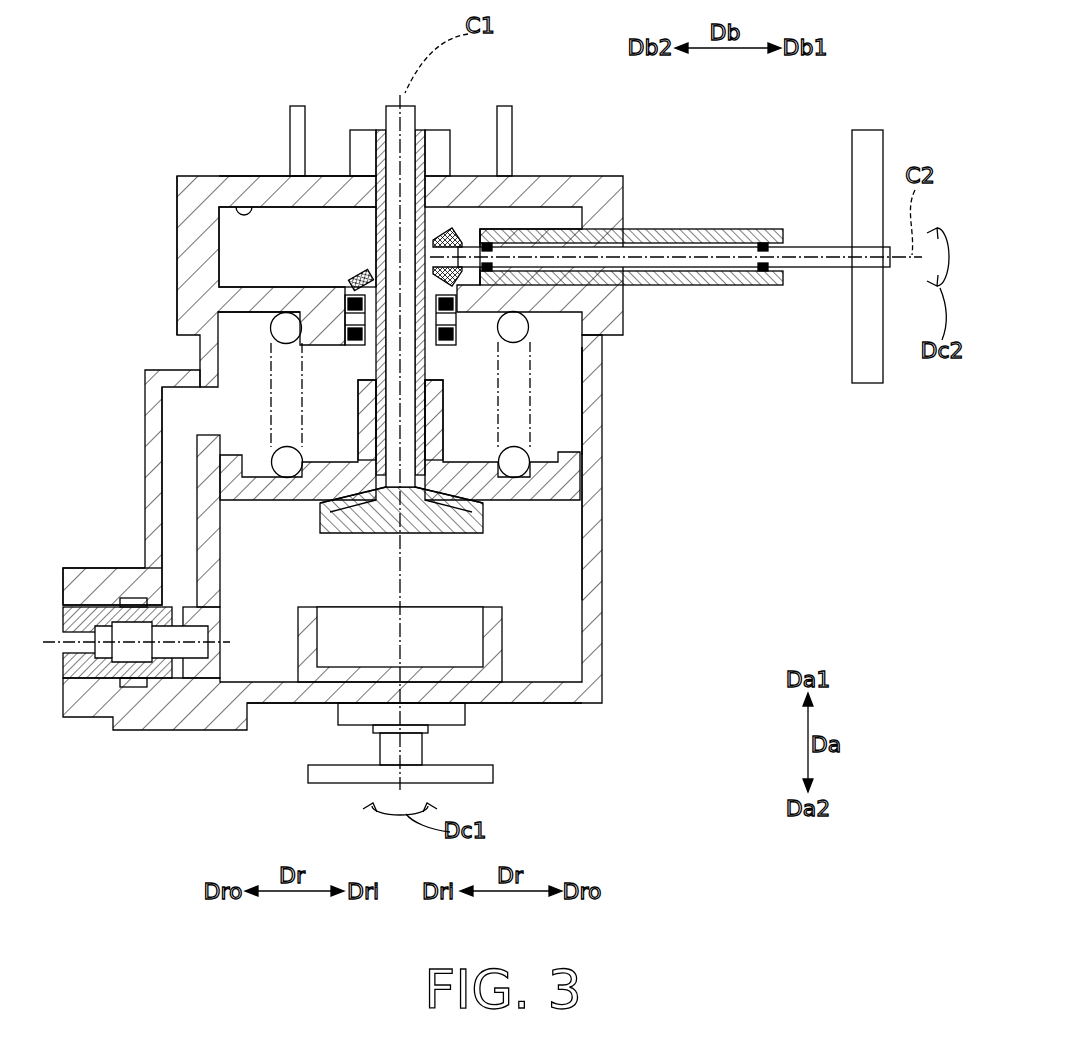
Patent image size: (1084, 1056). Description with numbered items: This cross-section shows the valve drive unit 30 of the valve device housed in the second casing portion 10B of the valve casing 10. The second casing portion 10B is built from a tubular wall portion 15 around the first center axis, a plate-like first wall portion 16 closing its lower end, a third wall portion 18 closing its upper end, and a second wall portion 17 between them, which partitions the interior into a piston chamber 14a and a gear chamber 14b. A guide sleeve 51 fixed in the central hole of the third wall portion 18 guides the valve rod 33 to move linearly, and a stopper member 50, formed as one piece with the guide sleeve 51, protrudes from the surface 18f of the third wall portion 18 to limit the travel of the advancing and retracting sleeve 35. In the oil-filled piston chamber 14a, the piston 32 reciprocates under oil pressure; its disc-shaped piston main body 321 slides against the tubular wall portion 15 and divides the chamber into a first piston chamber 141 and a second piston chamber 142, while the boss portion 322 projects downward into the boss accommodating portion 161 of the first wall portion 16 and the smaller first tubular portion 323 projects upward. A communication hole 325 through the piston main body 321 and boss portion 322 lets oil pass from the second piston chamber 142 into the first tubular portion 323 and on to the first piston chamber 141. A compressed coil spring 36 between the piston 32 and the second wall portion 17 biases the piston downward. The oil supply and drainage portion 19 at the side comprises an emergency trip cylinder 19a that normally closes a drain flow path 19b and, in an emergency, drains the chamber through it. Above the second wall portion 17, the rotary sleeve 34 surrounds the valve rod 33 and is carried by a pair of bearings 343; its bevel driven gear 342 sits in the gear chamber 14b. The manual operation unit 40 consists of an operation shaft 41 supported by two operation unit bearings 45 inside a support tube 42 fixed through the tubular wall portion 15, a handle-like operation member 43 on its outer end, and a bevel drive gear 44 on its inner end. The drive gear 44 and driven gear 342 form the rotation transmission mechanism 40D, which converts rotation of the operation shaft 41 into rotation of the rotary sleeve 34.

The valve casing 10 is at (584, 219).
The second casing portion 10B is at (614, 186).
The piston chamber 14a is at (407, 559).
The gear chamber 14b is at (240, 180).
The first piston chamber 141 is at (568, 423).
The second piston chamber 142 is at (557, 525).
The tubular wall portion 15 is at (596, 537).
The first wall portion 16 is at (548, 705).
The boss accommodating portion 161 is at (503, 632).
The second wall portion 17 is at (248, 317).
The third wall portion 18 is at (235, 182).
The surface of the third wall portion 18f is at (247, 214).
The oil supply and drainage portion 19 is at (165, 690).
The emergency trip cylinder 19a is at (152, 604).
The drain flow path 19b is at (172, 510).
The valve drive unit 30 is at (163, 270).
The piston 32 is at (330, 493).
The piston main body 321 is at (278, 500).
The boss portion 322 is at (468, 534).
The first tubular portion 323 is at (358, 440).
The communication hole 325 is at (318, 505).
The valve rod 33 is at (393, 127).
The rotary sleeve 34 is at (360, 362).
The driven gear 342 is at (352, 274).
The bearings 343 is at (460, 335).
The advancing and retracting sleeve 35 is at (367, 252).
The coil spring 36 is at (545, 388).
The manual operation unit 40 is at (662, 224).
The rotation transmission mechanism 40D is at (449, 220).
The operation shaft 41 is at (655, 250).
The support tube 42 is at (700, 233).
The operation member 43 is at (868, 135).
The drive gear 44 is at (487, 230).
The operation unit bearing 45 is at (494, 240).
The stopper member 50 is at (272, 227).
The guide sleeve 51 is at (375, 165).